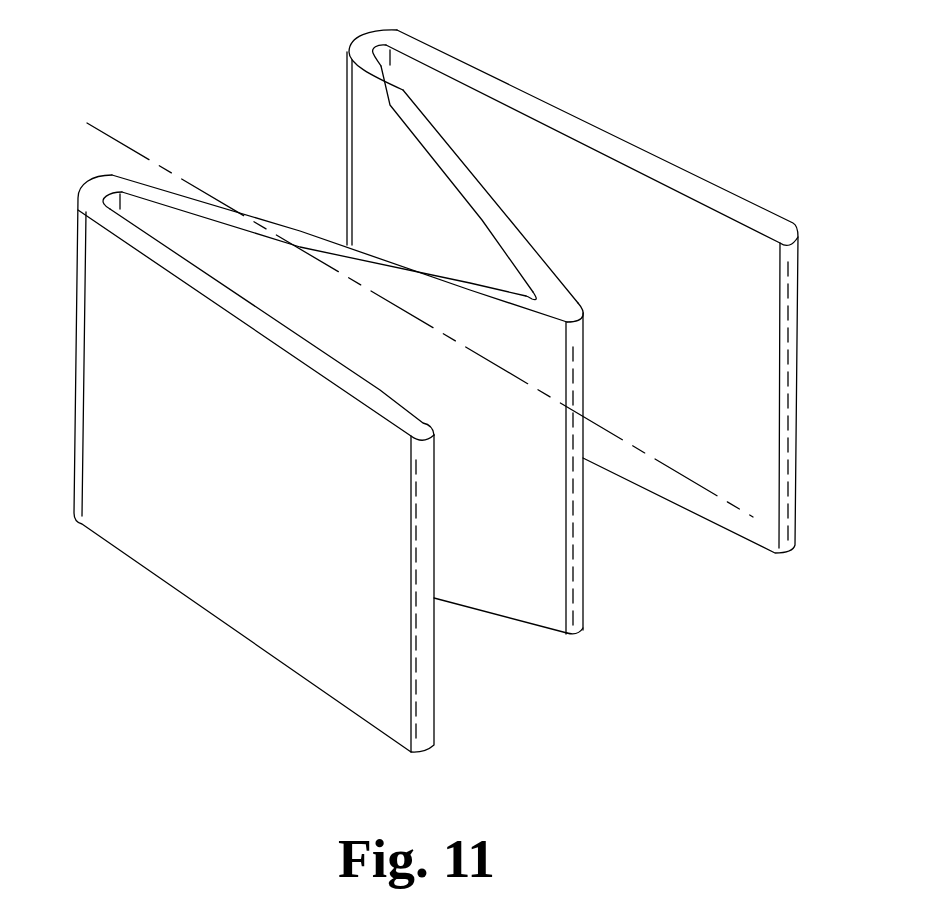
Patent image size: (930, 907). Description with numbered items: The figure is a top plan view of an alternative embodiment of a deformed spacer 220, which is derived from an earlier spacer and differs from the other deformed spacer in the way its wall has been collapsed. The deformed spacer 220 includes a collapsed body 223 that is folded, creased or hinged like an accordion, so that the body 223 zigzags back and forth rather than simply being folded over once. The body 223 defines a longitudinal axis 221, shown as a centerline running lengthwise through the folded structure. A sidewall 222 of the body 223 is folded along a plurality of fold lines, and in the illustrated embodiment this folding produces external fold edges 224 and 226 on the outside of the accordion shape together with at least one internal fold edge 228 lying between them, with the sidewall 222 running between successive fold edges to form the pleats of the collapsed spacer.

The deformed spacer 220 is at (619, 91).
The longitudinal axis 221 is at (703, 488).
The sidewall 222 is at (257, 491).
The collapsed body 223 is at (713, 243).
The external fold edge 224 is at (77, 237).
The external fold edge 226 is at (346, 103).
The internal fold edge 228 is at (583, 347).